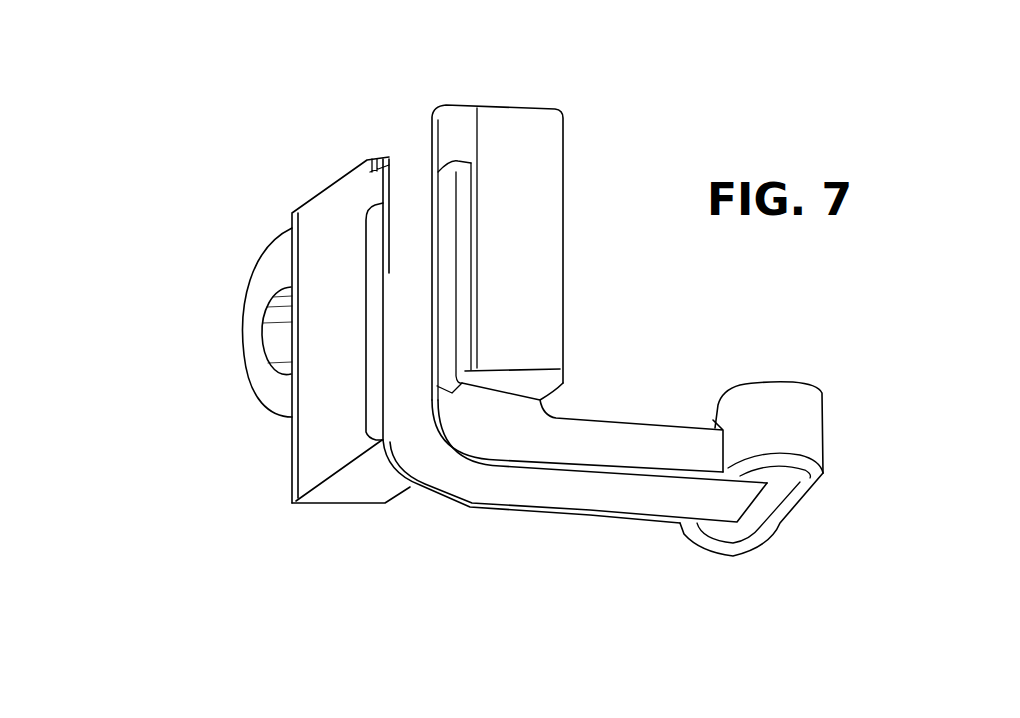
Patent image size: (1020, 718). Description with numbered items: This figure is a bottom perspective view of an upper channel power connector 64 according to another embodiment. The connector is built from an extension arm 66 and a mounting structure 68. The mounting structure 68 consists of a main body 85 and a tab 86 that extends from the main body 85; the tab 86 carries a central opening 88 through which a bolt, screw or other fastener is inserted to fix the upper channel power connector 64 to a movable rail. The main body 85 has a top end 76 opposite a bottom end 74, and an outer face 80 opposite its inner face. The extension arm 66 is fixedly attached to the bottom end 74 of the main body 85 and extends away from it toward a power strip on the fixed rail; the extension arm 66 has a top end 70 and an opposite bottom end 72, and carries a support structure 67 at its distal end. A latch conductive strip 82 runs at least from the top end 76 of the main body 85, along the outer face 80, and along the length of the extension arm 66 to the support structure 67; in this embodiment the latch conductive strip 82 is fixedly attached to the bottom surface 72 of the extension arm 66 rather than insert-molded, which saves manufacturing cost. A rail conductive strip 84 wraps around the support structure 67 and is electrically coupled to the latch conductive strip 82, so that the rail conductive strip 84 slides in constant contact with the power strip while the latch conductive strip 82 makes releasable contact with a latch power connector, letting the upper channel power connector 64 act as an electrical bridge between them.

The upper channel power connector 64 is at (117, 178).
The extension arm 66 is at (547, 512).
The support structure 67 is at (767, 512).
The mounting structure 68 is at (257, 432).
The top end of extension arm 70 is at (610, 418).
The bottom end of extension arm 72 is at (652, 530).
The bottom end of main body 74 is at (317, 508).
The top end of main body 76 is at (393, 128).
The outer face of main body 80 is at (330, 223).
The latch conductive strip 82 is at (400, 393).
The rail conductive strip 84 is at (813, 435).
The main body 85 is at (540, 177).
The tab 86 is at (240, 290).
The central opening 88 is at (270, 343).